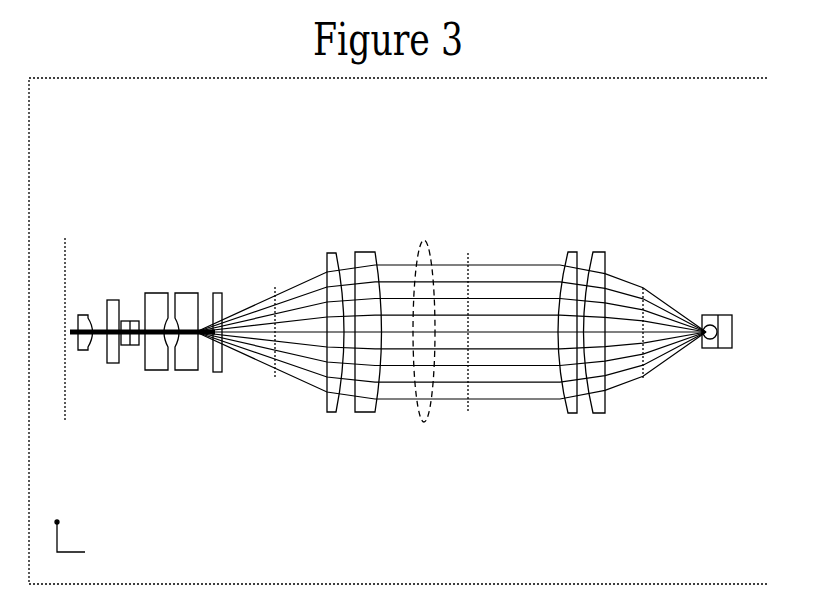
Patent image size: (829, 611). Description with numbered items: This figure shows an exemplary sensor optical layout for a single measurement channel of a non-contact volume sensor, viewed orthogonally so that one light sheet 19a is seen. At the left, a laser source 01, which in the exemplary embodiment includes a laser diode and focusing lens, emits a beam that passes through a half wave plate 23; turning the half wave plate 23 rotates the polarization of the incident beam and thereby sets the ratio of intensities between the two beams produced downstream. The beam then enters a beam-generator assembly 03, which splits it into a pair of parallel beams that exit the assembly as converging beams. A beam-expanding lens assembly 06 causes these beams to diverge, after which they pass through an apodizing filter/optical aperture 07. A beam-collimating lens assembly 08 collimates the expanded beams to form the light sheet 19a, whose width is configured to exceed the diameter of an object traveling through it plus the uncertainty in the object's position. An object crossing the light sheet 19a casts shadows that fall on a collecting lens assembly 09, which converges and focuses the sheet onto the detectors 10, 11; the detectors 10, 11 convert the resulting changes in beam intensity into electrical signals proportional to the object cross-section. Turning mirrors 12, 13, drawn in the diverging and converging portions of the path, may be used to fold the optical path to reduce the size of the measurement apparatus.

The laser source 01 is at (83, 298).
The beam-generator assembly 03 is at (127, 300).
The beam-expanding lens assembly 06 is at (187, 398).
The apodizing filter/optical aperture 07 is at (213, 275).
The beam-collimating lens assembly 08 is at (357, 375).
The collecting lens assembly 09 is at (583, 375).
The detector 10 is at (724, 286).
The detector 11 is at (747, 267).
The mirror 12 is at (275, 390).
The mirror 13 is at (643, 391).
The light sheet 19a is at (467, 203).
The half wave plate 23 is at (111, 380).